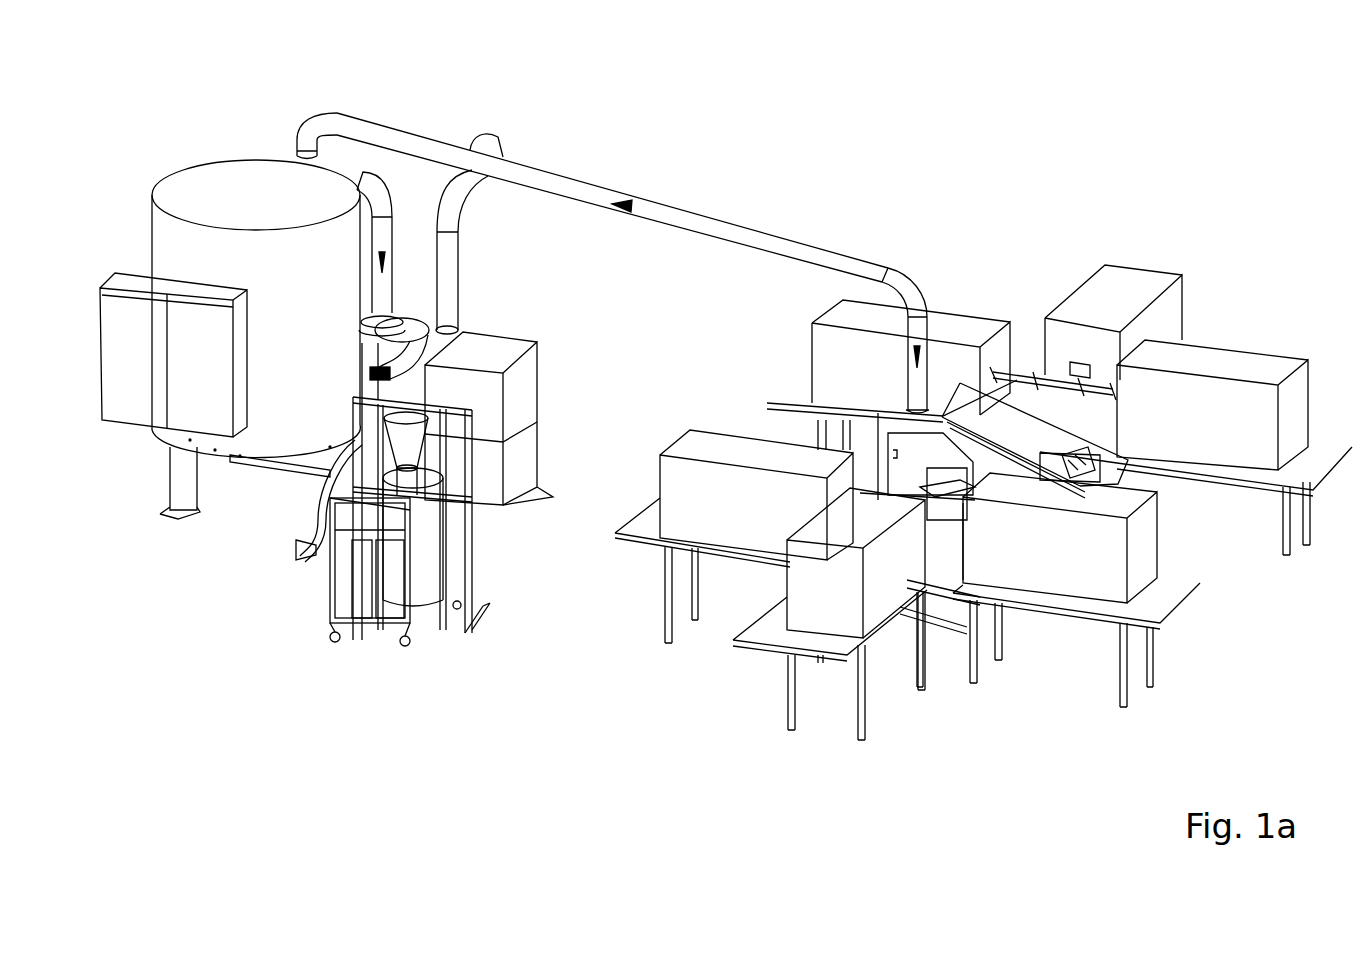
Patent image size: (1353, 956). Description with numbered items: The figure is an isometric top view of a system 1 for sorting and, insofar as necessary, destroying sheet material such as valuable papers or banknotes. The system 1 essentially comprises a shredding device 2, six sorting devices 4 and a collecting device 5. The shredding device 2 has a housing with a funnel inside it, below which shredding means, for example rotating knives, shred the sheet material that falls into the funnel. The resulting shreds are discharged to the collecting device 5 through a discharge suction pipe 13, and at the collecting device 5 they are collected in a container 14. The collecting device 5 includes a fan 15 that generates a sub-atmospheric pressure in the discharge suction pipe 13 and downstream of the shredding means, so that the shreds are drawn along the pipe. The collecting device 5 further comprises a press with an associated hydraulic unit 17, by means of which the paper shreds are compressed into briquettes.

The system 1 is at (1064, 114).
The shredding device 2 is at (1024, 446).
The sorting devices 4 is at (840, 357).
The collecting device 5 is at (227, 597).
The discharge suction pipe 13 is at (686, 216).
The container 14 is at (204, 178).
The fan 15 is at (412, 318).
The hydraulic unit 17 is at (483, 340).